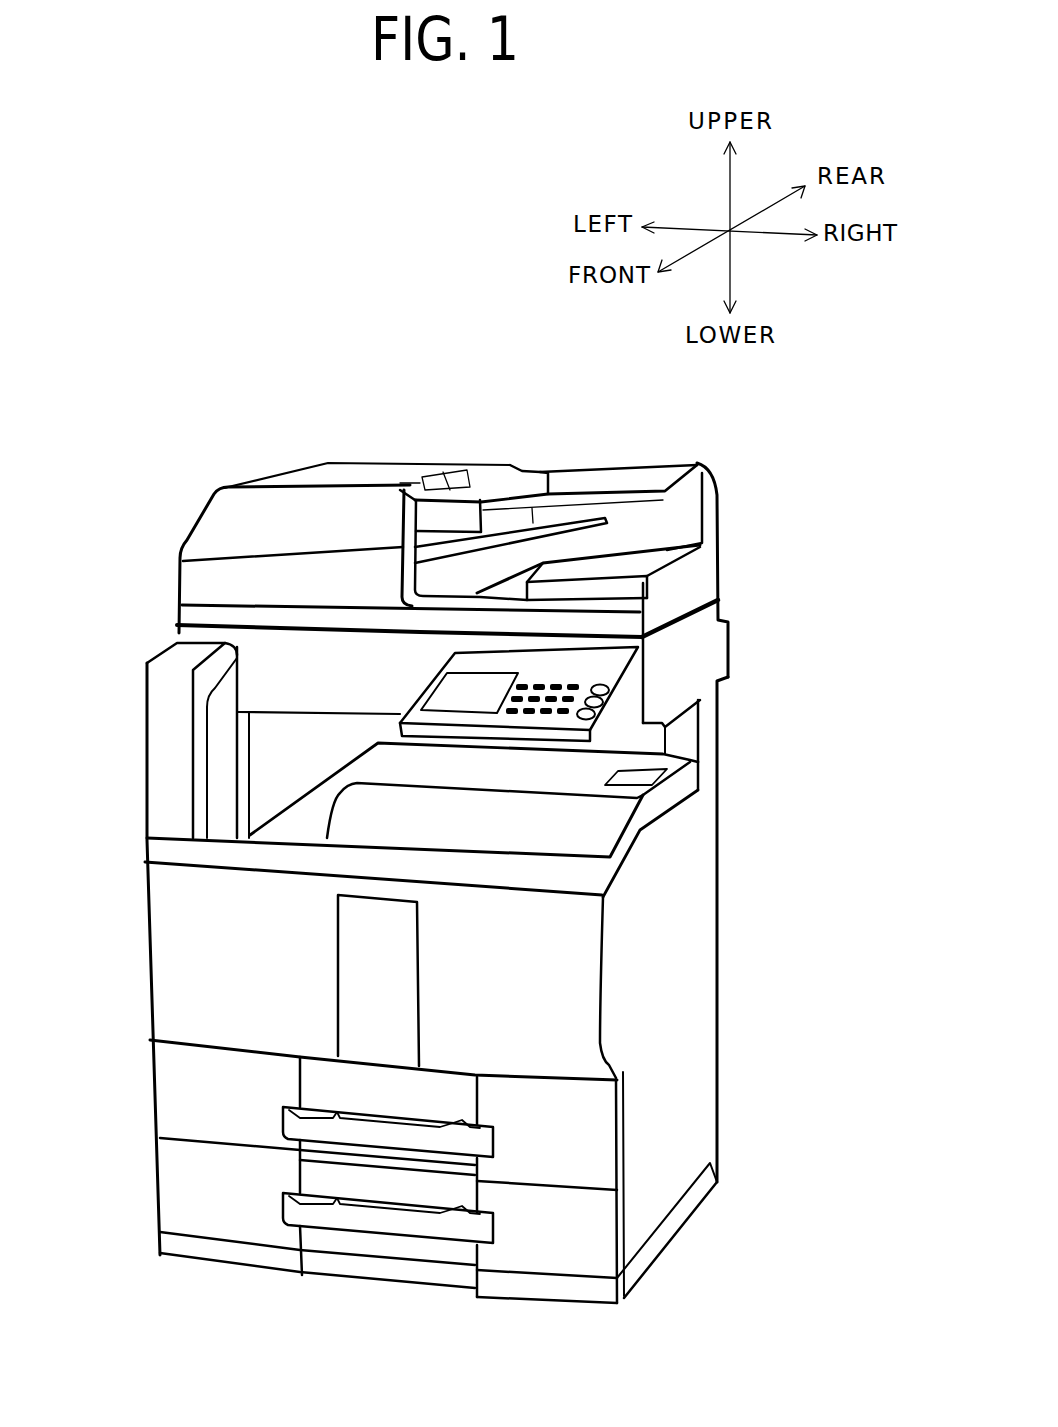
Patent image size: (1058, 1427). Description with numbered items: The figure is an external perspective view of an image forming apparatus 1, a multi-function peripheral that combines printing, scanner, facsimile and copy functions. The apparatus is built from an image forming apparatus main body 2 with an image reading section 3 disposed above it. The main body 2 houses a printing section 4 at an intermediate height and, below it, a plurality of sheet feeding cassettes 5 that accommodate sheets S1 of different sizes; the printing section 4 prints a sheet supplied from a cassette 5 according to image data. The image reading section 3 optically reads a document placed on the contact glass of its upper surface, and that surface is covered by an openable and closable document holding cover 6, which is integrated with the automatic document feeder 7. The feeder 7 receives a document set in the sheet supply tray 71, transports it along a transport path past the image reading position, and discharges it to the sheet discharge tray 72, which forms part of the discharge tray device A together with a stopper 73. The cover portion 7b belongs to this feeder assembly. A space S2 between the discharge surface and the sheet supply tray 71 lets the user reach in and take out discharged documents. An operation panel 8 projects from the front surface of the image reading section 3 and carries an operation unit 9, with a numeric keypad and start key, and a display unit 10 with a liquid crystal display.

The image forming apparatus 1 is at (155, 545).
The image forming apparatus main body 2 is at (720, 902).
The image reading section 3 is at (728, 558).
The printing section 4 is at (222, 968).
The sheet feeding cassettes 5 is at (222, 1194).
The document holding cover 6 is at (700, 600).
The automatic document feeder 7 is at (571, 465).
The document cover 7b is at (295, 572).
The operation panel 8 is at (406, 694).
The operation unit 9 is at (573, 680).
The display unit 10 is at (463, 691).
The sheet supply tray 71 is at (683, 480).
The sheet discharge tray 72 is at (640, 530).
The stopper 73 is at (652, 557).
The discharge tray device A is at (608, 553).
The sheet S1 is at (317, 760).
The space S2 is at (477, 572).